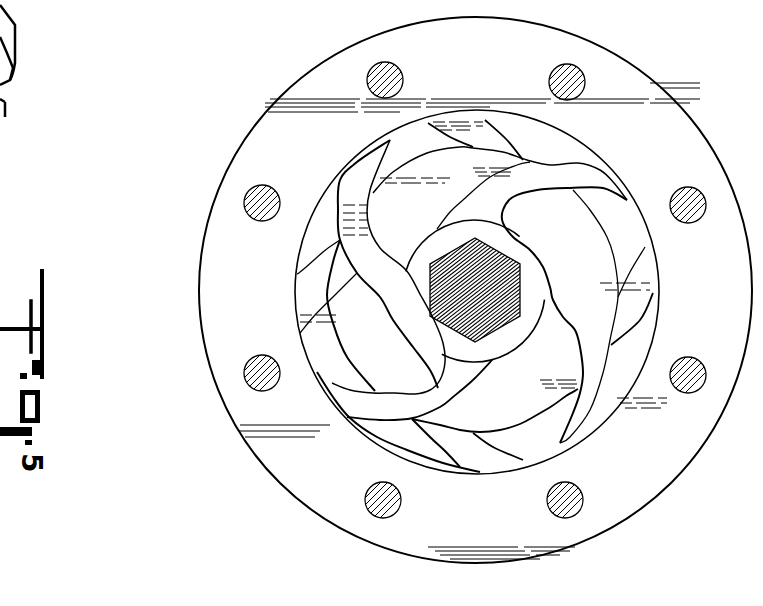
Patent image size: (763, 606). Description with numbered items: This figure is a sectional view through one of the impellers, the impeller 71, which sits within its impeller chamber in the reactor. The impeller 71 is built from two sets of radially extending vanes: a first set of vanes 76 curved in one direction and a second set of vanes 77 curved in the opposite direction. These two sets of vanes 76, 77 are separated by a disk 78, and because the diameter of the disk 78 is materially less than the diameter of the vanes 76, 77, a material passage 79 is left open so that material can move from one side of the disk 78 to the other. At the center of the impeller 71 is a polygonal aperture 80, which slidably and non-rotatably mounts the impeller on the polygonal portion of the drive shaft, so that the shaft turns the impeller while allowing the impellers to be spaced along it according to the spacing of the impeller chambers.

The impeller 71 is at (609, 228).
The polygonal aperture 80 is at (519, 288).
The radially extending vanes 76 is at (640, 314).
The second set of radially extending vanes 77 is at (618, 379).
The disk 78 is at (532, 422).
The material passage 79 is at (318, 374).